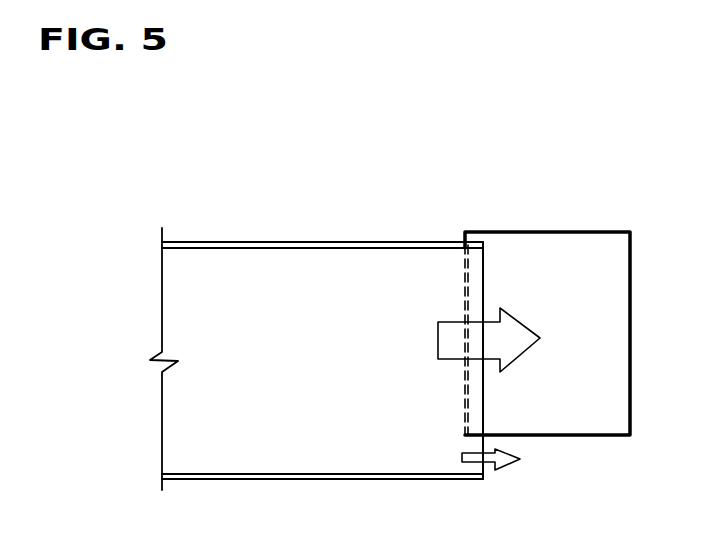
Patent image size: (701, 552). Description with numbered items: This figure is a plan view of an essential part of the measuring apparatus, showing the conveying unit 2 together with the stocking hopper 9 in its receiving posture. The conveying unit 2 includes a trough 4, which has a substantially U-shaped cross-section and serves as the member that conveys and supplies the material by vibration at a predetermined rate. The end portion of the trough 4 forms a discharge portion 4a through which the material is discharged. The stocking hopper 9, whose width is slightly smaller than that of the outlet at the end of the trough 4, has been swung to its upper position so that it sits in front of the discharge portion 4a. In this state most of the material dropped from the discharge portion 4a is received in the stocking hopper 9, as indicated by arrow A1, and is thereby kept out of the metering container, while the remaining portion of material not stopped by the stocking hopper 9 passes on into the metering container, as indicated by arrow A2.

The conveying unit 2 is at (236, 239).
The trough 4 is at (318, 242).
The discharge portion 4a is at (492, 291).
The stocking hopper 9 is at (552, 232).
The arrow A1 is at (515, 331).
The arrow A2 is at (510, 462).